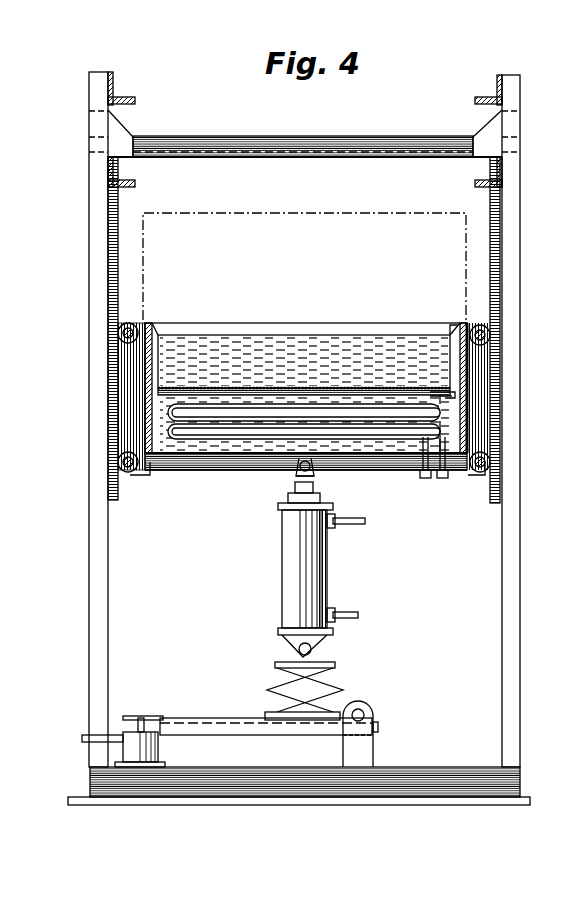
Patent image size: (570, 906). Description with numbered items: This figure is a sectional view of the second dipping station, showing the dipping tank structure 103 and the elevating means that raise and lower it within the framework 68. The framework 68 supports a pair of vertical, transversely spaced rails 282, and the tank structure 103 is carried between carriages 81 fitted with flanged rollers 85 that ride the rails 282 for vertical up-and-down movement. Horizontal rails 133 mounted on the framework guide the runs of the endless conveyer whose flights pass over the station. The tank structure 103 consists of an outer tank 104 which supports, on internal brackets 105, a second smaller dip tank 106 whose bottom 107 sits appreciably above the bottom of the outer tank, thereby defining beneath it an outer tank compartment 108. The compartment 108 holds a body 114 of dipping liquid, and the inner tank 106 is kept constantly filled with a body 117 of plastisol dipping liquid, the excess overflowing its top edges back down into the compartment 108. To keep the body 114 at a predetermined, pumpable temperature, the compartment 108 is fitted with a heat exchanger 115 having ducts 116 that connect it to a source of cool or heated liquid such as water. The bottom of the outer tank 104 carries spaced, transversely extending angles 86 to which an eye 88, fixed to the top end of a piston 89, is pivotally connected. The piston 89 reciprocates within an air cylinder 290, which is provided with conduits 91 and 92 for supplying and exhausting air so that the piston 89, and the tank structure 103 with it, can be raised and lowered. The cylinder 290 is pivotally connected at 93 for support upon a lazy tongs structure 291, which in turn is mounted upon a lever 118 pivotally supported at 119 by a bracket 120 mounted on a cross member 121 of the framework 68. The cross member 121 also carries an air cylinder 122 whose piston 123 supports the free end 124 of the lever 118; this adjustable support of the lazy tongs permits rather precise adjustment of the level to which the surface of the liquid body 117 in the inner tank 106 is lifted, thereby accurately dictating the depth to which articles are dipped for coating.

The framework 68 is at (520, 290).
The rail 133 is at (135, 100).
The vertical rails 282 is at (118, 262).
The tank structure 103 is at (178, 323).
The internal brackets 105 is at (150, 378).
The outer tank compartment 108 is at (225, 388).
The body of dipping liquid 117 is at (345, 345).
The bottom of inner tank 107 is at (283, 392).
The ducts 116 is at (442, 478).
The outer tank 104 is at (452, 323).
The inner dip tank 106 is at (440, 323).
The body of dipping liquid 114 is at (215, 456).
The heat exchanger 115 is at (265, 458).
The angles 86 is at (378, 471).
The brackets 81 is at (145, 476).
The flanged rollers 85 is at (136, 327).
The piston 89 is at (314, 488).
The eye 88 is at (296, 482).
The air cylinder 290 is at (330, 585).
The conduit 92 is at (355, 525).
The conduit 91 is at (350, 616).
The pivotal connection 93 is at (318, 648).
The scissor linkage 291 is at (338, 685).
The lever 118 is at (240, 718).
The pivot 119 is at (366, 711).
The bracket 120 is at (375, 752).
The air cylinder 122 is at (160, 745).
The free end of lever 124 is at (146, 718).
The piston 123 is at (105, 728).
The cross member 121 is at (474, 768).